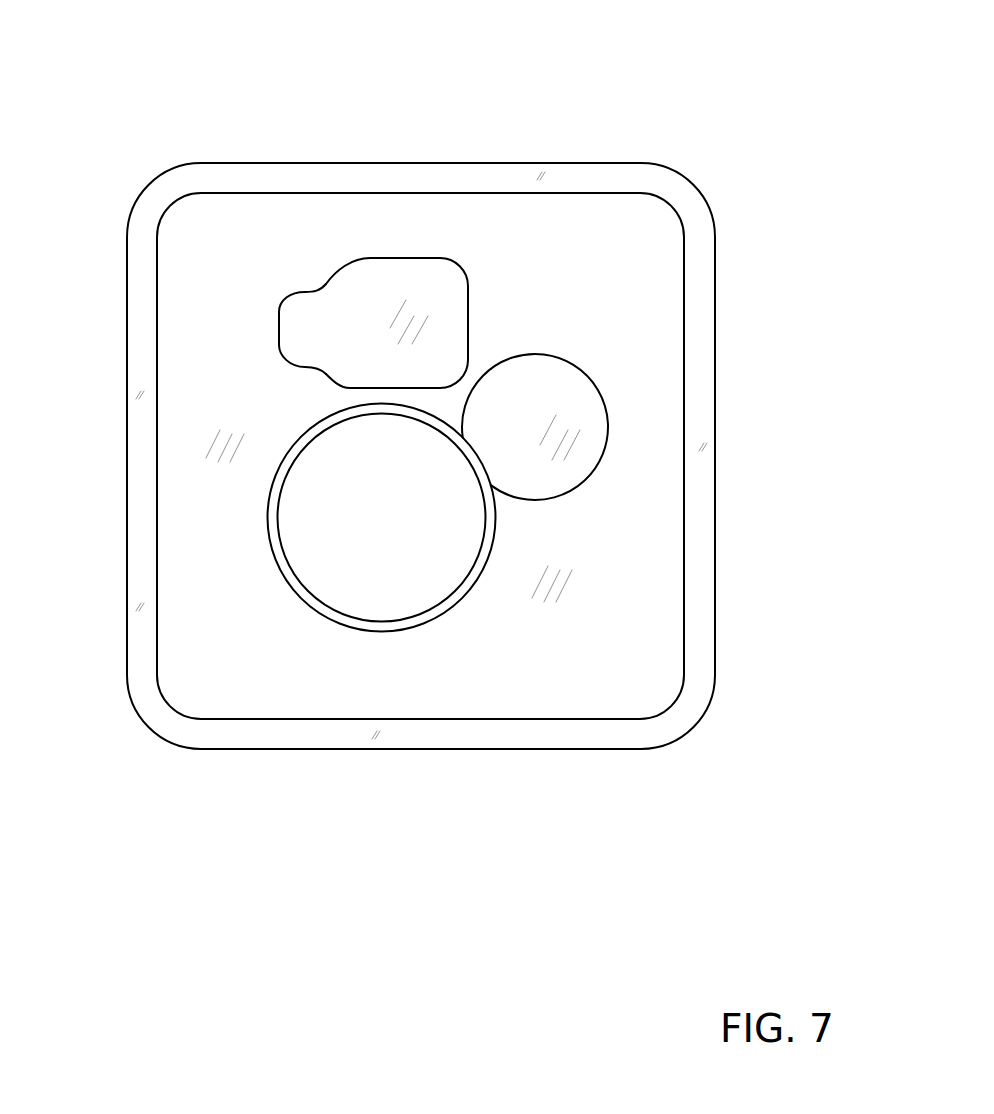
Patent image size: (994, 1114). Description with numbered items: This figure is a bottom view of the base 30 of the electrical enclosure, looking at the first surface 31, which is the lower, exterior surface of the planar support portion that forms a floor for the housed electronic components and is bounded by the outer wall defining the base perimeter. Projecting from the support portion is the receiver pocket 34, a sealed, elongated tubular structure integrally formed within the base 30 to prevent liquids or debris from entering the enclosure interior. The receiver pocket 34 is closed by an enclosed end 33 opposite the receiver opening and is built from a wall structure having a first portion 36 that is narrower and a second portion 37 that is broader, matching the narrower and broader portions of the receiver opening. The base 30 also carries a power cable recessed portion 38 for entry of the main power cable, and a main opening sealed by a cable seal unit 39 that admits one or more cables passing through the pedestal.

The base 30 is at (682, 148).
The first surface 31 is at (468, 673).
The enclosed end 33 is at (440, 288).
The receiver pocket 34 is at (312, 268).
The first portion 36 is at (277, 335).
The second portion 37 is at (403, 258).
The power cable recessed portion 38 is at (607, 413).
The cable seal unit 39 is at (304, 603).